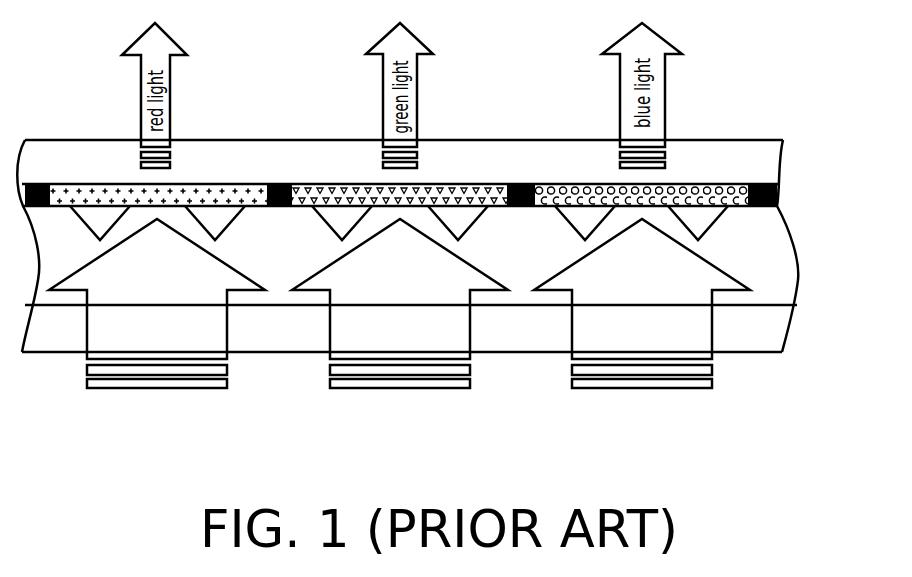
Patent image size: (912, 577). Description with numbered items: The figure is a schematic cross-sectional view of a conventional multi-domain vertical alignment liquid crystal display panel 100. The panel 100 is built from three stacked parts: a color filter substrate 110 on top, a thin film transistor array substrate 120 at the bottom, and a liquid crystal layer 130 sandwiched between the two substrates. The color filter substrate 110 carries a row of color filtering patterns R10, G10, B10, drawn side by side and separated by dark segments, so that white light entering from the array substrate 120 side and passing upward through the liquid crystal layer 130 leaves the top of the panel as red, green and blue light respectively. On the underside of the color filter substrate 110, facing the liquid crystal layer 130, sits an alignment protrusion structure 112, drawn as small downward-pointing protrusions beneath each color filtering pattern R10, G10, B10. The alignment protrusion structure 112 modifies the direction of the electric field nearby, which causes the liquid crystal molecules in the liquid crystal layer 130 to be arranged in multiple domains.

The MVA LCD panel 100 is at (428, 440).
The color filter substrate 110 is at (763, 163).
The alignment protrusion structure 112 is at (703, 220).
The thin film transistor (TFT) array substrate 120 is at (773, 332).
The liquid crystal layer 130 is at (790, 288).
The color filtering pattern R10 is at (245, 185).
The color filtering pattern G10 is at (483, 185).
The color filtering pattern B10 is at (722, 185).